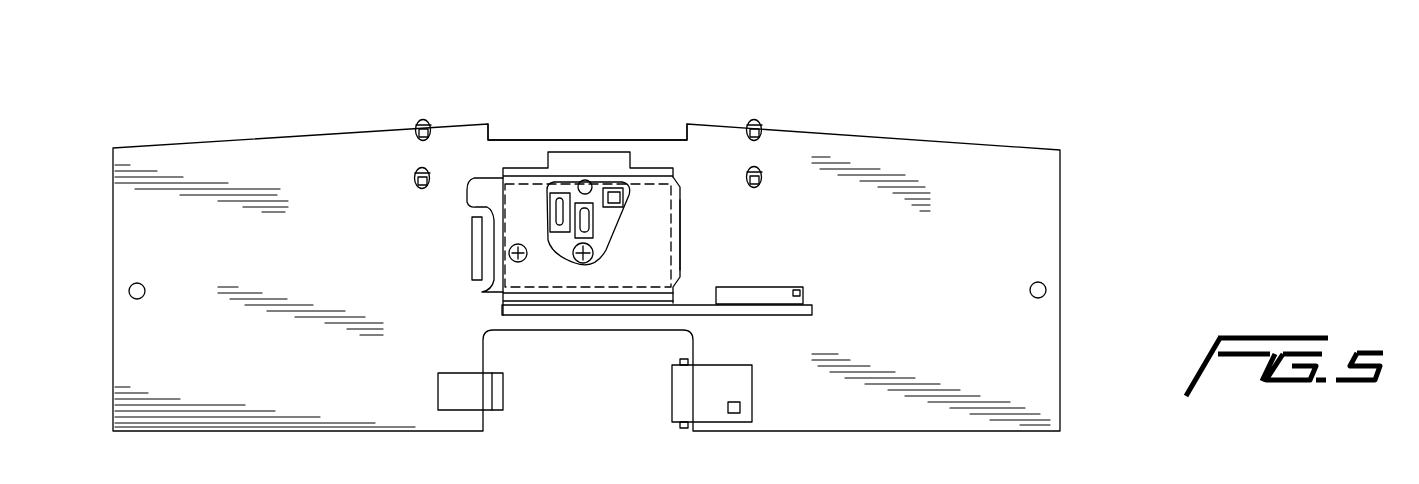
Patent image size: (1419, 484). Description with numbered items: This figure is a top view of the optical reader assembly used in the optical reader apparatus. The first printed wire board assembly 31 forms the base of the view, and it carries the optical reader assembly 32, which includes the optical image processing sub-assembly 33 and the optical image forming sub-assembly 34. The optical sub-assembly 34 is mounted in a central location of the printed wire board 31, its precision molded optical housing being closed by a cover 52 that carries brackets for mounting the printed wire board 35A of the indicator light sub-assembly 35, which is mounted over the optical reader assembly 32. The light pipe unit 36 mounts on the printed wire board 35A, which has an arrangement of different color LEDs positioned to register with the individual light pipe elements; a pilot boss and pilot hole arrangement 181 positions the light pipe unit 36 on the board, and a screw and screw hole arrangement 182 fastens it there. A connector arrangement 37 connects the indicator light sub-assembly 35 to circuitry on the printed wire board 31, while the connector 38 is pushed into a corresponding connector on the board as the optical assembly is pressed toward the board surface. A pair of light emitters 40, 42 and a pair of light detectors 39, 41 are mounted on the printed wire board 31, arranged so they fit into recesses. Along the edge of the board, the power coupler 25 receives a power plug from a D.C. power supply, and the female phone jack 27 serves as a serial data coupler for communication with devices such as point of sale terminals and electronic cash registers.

The power coupler 25 is at (483, 400).
The female phone jack 27 is at (684, 404).
The printed wire board assembly 31 is at (1021, 165).
The optical reader assembly 32 is at (690, 240).
The optical image processing sub-assembly 33 is at (688, 317).
The optical image forming sub-assembly 34 is at (609, 142).
The indicator light sub-assembly 35 is at (529, 226).
The printed wire board 35A is at (680, 180).
The light pipe unit 36 is at (606, 228).
The connector arrangement 37 is at (466, 224).
The connector 38 is at (806, 293).
The light detector 39 is at (757, 119).
The light emitter 40 is at (757, 166).
The light detector 41 is at (423, 119).
The light emitter 42 is at (420, 167).
The cover 52 is at (563, 164).
The pilot boss and pilot hole arrangement 181 is at (585, 179).
The screw and screw hole arrangement 182 is at (589, 263).